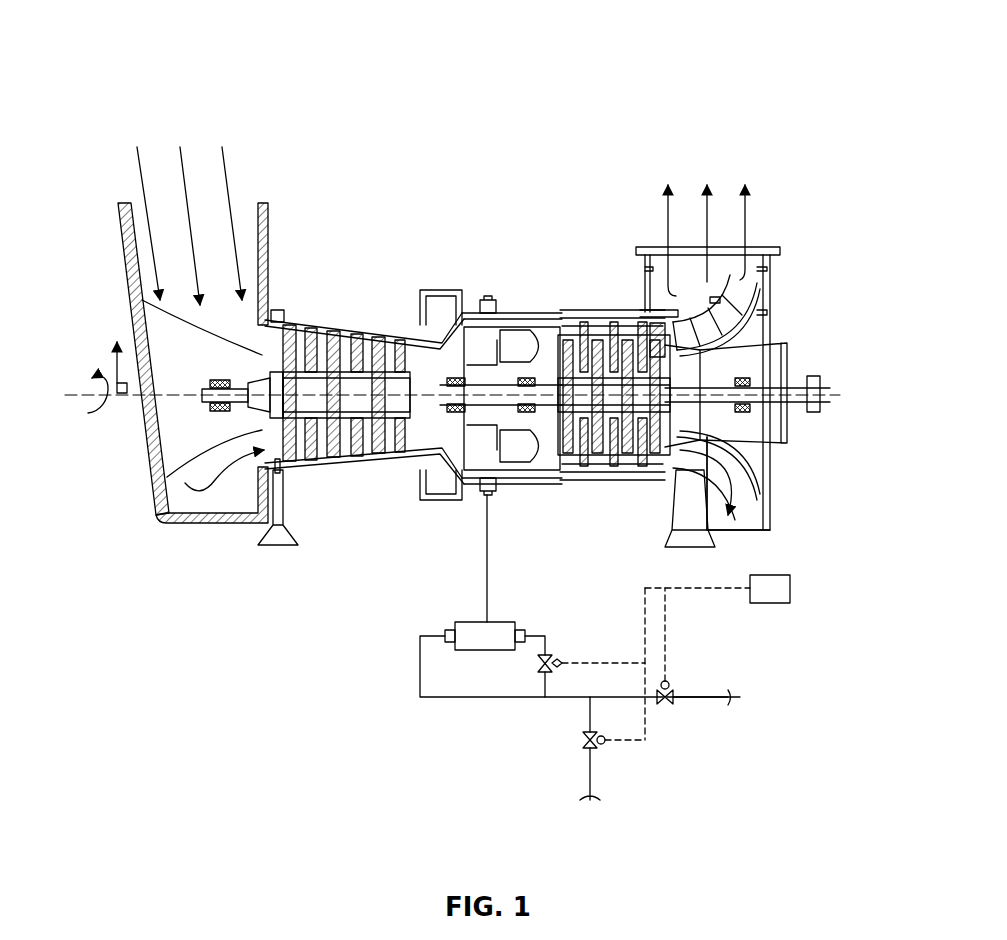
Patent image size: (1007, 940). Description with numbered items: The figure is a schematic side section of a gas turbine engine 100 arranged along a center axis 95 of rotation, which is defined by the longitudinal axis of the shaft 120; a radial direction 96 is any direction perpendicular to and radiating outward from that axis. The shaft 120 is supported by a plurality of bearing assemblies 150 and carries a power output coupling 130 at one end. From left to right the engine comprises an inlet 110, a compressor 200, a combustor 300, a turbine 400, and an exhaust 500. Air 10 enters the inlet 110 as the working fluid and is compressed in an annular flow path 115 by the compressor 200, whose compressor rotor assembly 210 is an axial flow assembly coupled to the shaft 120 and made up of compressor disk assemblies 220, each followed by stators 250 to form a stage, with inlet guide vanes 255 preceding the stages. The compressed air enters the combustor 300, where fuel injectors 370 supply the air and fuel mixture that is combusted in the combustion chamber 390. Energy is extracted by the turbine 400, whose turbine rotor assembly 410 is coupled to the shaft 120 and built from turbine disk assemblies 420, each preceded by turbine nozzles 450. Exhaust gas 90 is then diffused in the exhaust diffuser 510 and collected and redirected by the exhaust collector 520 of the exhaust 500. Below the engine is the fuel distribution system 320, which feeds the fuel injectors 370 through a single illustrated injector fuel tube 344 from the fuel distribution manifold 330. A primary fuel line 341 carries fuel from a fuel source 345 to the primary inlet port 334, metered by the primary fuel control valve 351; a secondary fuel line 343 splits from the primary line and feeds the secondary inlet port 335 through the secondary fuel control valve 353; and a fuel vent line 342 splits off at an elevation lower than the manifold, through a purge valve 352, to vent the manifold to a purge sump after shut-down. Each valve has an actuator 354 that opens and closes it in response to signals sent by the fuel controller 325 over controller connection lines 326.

The gas turbine engine 100 is at (138, 44).
The air 10 is at (138, 175).
The exhaust gas 90 is at (662, 208).
The center axis 95 is at (92, 410).
The radial direction 96 is at (114, 362).
The inlet 110 is at (108, 124).
The annular flow path 115 is at (250, 334).
The shaft 120 is at (208, 382).
The power output coupling 130 is at (813, 376).
The bearing assemblies 150 is at (422, 313).
The compressor 200 is at (445, 124).
The compressor rotor assembly 210 is at (345, 472).
The compressor disk assemblies 220 is at (394, 470).
The compressor stationary vanes (stators) 250 is at (406, 338).
The inlet guide vanes 255 is at (285, 312).
The combustor 300 is at (545, 124).
The fuel distribution system 320 is at (840, 512).
The fuel controller 325 is at (792, 598).
The controller connection lines 326 is at (703, 585).
The fuel distribution manifold 330 is at (500, 650).
The primary inlet port 334 is at (445, 630).
The secondary inlet port 335 is at (525, 630).
The primary fuel line 341 is at (420, 678).
The fuel vent line 342 is at (580, 788).
The secondary fuel line 343 is at (550, 645).
The injector fuel tubes 344 is at (495, 540).
The fuel source 345 is at (735, 700).
The primary fuel control valve 351 is at (665, 705).
The purge valve 352 is at (580, 740).
The secondary fuel control valve 353 is at (537, 672).
The actuator 354 is at (665, 675).
The fuel injectors 370 is at (485, 300).
The combustion chamber 390 is at (505, 318).
The turbine 400 is at (660, 124).
The turbine rotor assembly 410 is at (600, 490).
The turbine disk assemblies 420 is at (605, 485).
The turbine nozzles 450 is at (644, 326).
The exhaust 500 is at (820, 144).
The exhaust diffuser 510 is at (752, 240).
The exhaust collector 520 is at (765, 290).